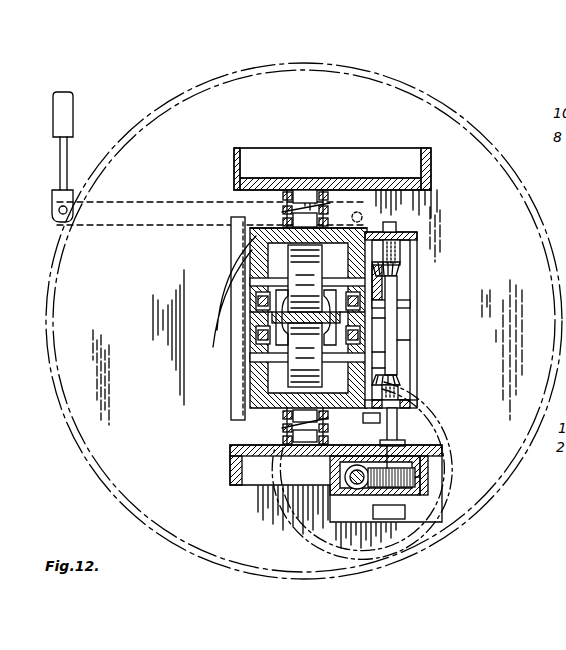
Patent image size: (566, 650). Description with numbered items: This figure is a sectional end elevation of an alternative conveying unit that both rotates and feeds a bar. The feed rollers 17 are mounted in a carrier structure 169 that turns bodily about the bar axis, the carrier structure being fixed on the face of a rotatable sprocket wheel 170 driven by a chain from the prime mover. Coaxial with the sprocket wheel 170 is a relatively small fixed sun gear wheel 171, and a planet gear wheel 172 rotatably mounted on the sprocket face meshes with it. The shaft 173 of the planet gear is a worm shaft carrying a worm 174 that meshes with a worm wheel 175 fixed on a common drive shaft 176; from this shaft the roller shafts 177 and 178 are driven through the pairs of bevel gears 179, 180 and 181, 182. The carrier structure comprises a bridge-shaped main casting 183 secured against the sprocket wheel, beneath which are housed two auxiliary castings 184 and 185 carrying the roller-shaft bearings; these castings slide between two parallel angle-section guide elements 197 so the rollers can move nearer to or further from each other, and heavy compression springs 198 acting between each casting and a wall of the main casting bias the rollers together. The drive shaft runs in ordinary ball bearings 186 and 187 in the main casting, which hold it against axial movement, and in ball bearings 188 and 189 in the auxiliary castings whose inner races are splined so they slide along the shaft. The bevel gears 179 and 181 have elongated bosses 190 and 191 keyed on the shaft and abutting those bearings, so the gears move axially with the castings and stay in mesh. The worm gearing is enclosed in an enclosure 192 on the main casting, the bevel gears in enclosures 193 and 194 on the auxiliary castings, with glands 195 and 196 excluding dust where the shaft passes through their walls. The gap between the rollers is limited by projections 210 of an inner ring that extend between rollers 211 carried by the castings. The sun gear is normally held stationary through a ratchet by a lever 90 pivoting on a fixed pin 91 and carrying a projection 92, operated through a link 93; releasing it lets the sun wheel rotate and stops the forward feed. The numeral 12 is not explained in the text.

The motor 12 is at (289, 260).
The rollers 17 is at (289, 380).
The lever 90 is at (113, 207).
The fixed pin 91 is at (359, 211).
The projection 92 is at (300, 190).
The link 93 is at (90, 171).
The carrier structure 169 is at (331, 148).
The sprocket wheel 170 is at (358, 84).
The sun gear wheel 171 is at (235, 366).
The planet gear wheel 172 is at (275, 503).
The worm shaft 173 is at (355, 465).
The worm 174 is at (352, 496).
The worm wheel 175 is at (398, 477).
The common drive shaft 176 is at (387, 432).
The shaft 177 is at (250, 280).
The shaft 178 is at (250, 357).
The bevel gear 179 is at (383, 268).
The bevel gear 180 is at (380, 300).
The bevel gear 181 is at (388, 383).
The bevel gear 182 is at (378, 369).
The main casting 183 is at (248, 160).
The auxiliary casting 184 is at (268, 230).
The auxiliary casting 185 is at (283, 437).
The ball bearing 186 is at (437, 525).
The ball bearing 187 is at (405, 444).
The ball bearing 188 is at (396, 408).
The ball bearing 189 is at (399, 239).
The elongated boss 190 is at (401, 253).
The elongated boss 191 is at (399, 392).
The enclosure 192 is at (406, 508).
The enclosure 193 is at (378, 352).
The enclosure 194 is at (440, 290).
The gland 195 is at (398, 340).
The gland 196 is at (375, 320).
The guide elements 197 is at (232, 253).
The compression springs 198 is at (328, 195).
The projections 210 is at (250, 314).
The rollers 211 is at (258, 300).